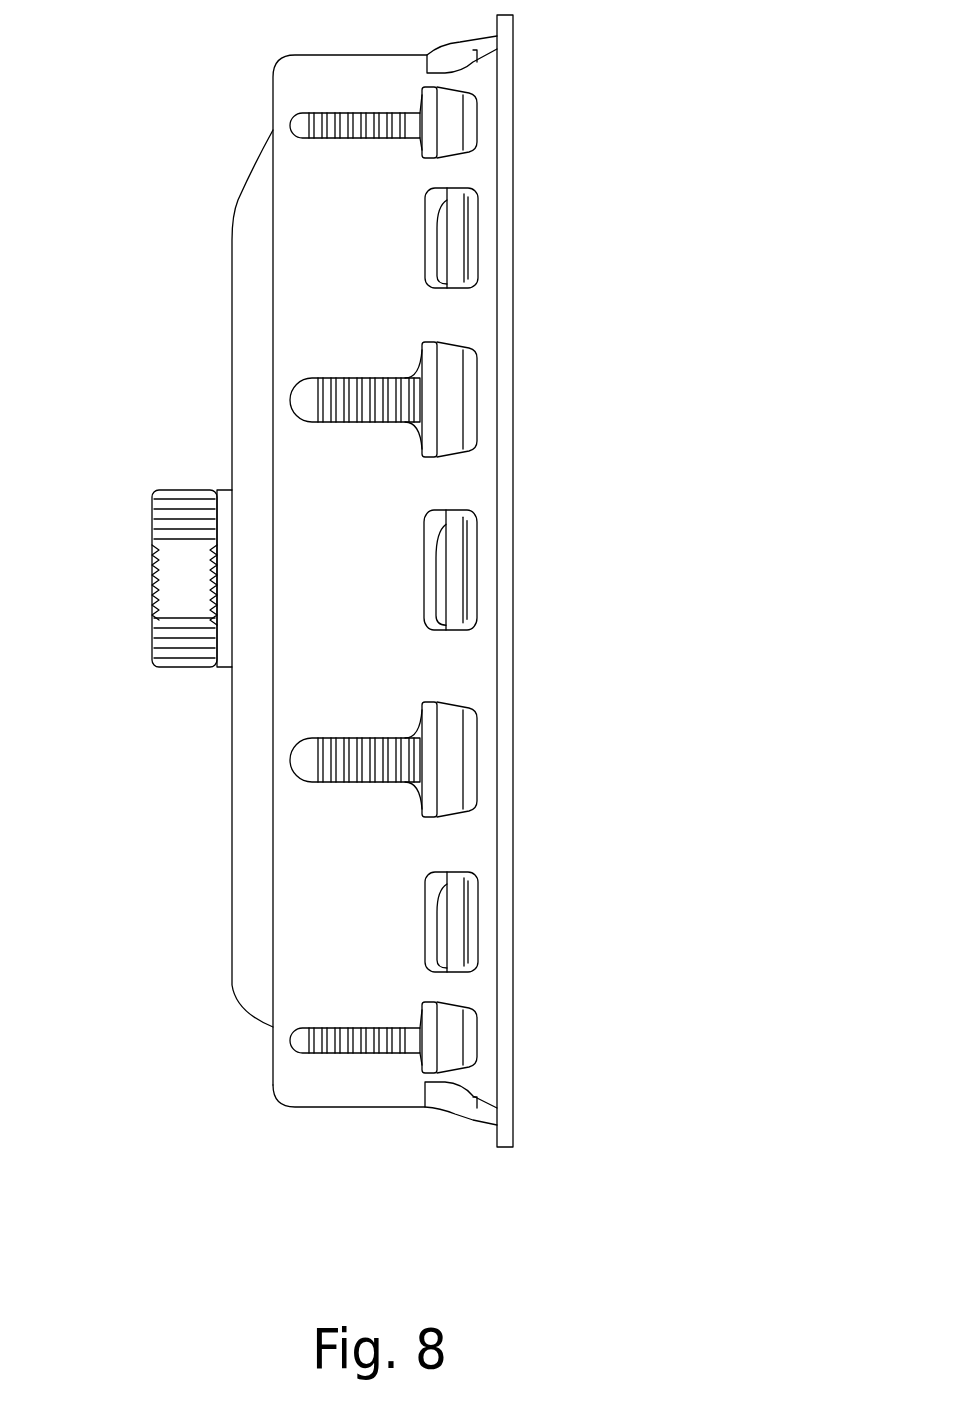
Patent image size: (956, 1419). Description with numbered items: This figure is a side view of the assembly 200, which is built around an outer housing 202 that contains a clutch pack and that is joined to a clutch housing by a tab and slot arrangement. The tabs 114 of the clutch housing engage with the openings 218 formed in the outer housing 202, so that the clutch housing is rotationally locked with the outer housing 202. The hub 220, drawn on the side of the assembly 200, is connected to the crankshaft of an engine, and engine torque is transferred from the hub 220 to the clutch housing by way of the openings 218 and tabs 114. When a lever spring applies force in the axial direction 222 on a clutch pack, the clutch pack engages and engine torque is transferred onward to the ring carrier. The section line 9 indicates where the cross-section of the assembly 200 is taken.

The light-emitting device assembly 200 is at (185, 998).
The mounting plate 202 is at (512, 1020).
The thumb screw 114 is at (453, 375).
The mounting boss 218 is at (424, 258).
The knurled knob 220 is at (180, 668).
The insertion direction 222 is at (558, 763).
The section line 9- 9 is at (98, 582).